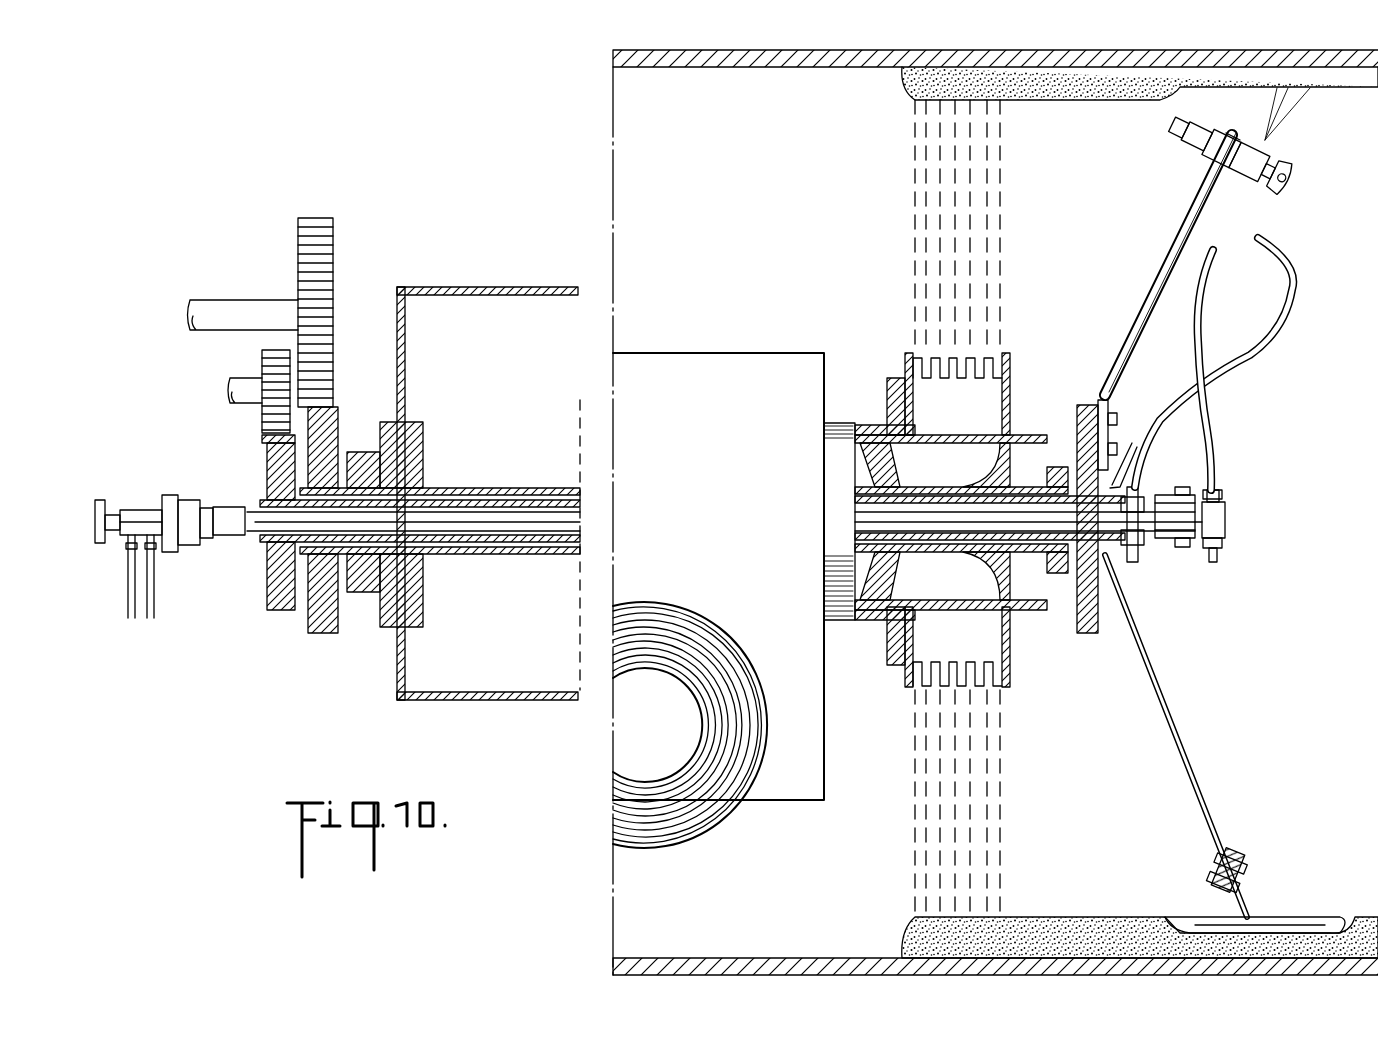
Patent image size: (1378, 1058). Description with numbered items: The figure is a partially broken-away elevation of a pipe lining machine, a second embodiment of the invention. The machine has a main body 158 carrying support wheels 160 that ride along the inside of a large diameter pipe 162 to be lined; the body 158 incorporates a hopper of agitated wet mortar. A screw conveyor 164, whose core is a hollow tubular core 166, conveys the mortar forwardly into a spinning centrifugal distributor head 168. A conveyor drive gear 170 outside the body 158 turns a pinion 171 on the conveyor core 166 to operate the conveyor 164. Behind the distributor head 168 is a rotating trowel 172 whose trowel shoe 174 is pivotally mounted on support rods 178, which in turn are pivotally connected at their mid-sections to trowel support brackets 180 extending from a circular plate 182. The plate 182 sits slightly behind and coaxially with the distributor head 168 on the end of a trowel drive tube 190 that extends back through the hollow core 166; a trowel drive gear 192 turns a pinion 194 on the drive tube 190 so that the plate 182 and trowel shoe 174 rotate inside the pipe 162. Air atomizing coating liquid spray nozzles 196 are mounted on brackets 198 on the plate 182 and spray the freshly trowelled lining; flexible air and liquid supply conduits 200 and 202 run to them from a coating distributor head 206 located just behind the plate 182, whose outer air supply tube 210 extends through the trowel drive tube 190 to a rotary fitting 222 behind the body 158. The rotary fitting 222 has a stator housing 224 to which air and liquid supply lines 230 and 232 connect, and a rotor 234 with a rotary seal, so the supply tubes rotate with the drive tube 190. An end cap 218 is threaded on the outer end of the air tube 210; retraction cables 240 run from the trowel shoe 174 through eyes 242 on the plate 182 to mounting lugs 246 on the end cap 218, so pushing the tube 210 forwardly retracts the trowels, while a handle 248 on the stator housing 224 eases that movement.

The main body 158 is at (472, 287).
The support wheels 160 is at (710, 818).
The pipe 162 is at (748, 62).
The screw conveyor 164 is at (824, 580).
The hollow tubular core 166 is at (517, 556).
The centrifugal distributor head 168 is at (905, 362).
The conveyor drive gear 170 is at (323, 218).
The pinion 171 is at (318, 637).
The rotating trowel 172 is at (1251, 852).
The trowel shoe 174 is at (1318, 917).
The support rods 178 is at (1218, 860).
The trowel support brackets 180 is at (1190, 762).
The circular plate 182 is at (1090, 633).
The trowel drive tube 190 is at (527, 500).
The trowel drive gear 192 is at (265, 363).
The pinion 194 is at (267, 456).
The air atomizing coating liquid spray nozzles 196 is at (1285, 173).
The brackets 198 is at (1165, 297).
The flexible air supply conduits 200 is at (1262, 338).
The flexible liquid supply conduits 202 is at (1200, 296).
The coating distributor head 206 is at (1242, 512).
The air supply tube 210 is at (456, 512).
The end cap 218 is at (1226, 522).
The rotary fitting 222 is at (197, 556).
The stator housing 224 is at (140, 510).
The air supply line 230 is at (154, 612).
The liquid supply line 232 is at (128, 607).
The rotor 234 is at (198, 500).
The retraction cables 240 is at (1150, 495).
The eyes 242 is at (1118, 470).
The mounting lugs 246 is at (1183, 487).
The handle 248 is at (100, 500).